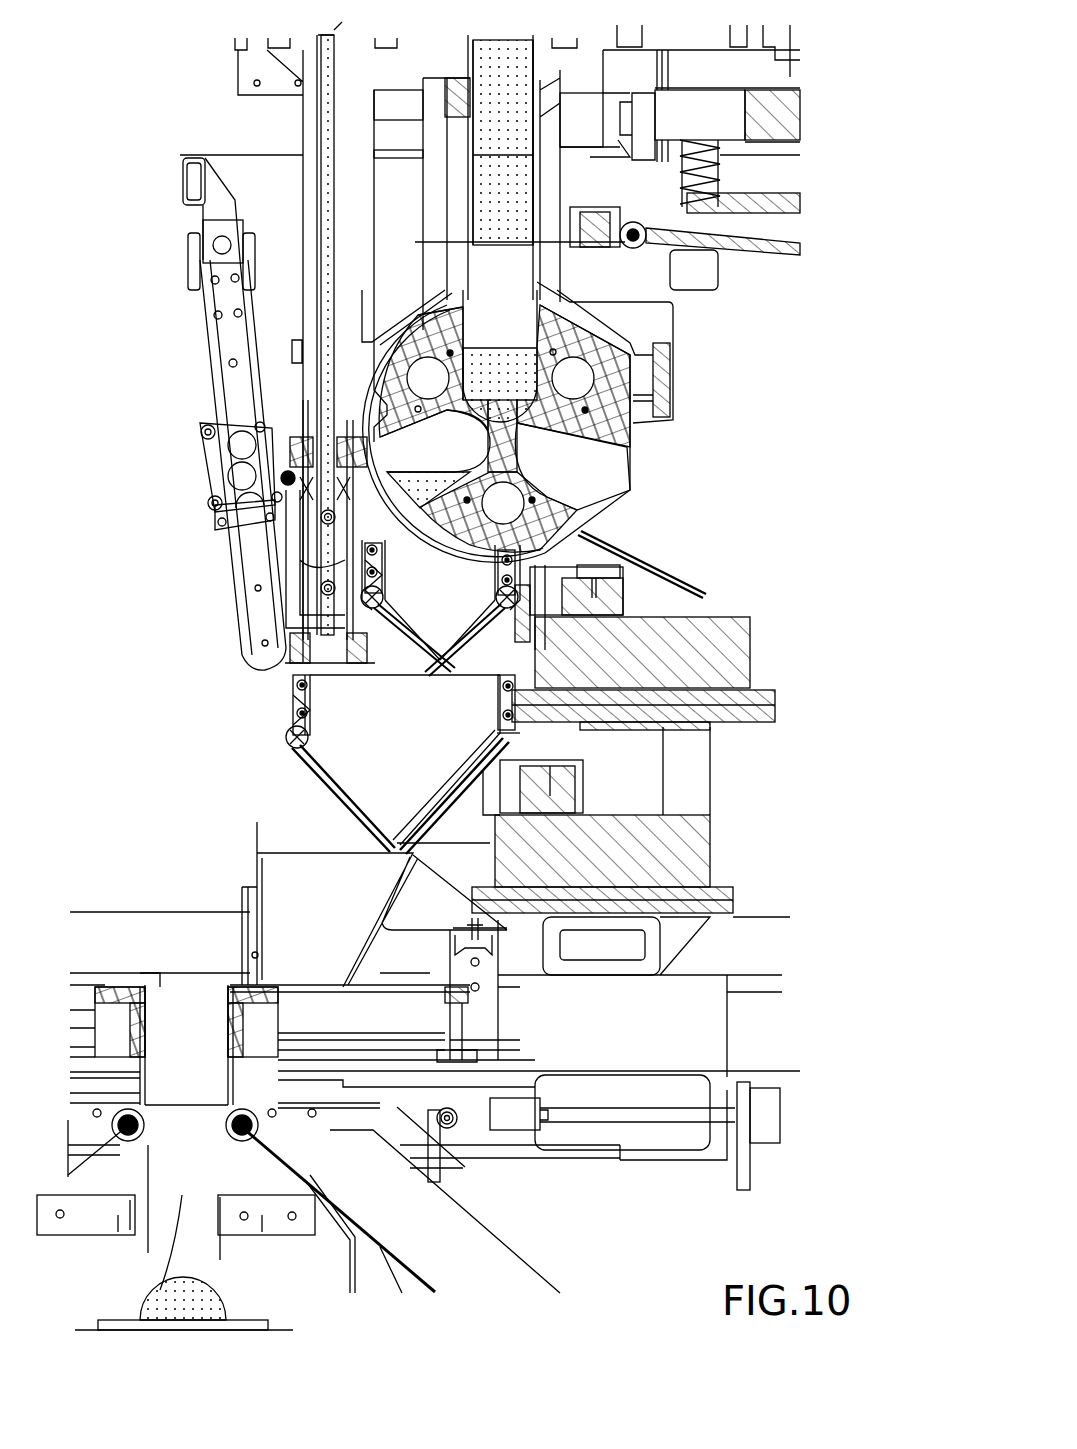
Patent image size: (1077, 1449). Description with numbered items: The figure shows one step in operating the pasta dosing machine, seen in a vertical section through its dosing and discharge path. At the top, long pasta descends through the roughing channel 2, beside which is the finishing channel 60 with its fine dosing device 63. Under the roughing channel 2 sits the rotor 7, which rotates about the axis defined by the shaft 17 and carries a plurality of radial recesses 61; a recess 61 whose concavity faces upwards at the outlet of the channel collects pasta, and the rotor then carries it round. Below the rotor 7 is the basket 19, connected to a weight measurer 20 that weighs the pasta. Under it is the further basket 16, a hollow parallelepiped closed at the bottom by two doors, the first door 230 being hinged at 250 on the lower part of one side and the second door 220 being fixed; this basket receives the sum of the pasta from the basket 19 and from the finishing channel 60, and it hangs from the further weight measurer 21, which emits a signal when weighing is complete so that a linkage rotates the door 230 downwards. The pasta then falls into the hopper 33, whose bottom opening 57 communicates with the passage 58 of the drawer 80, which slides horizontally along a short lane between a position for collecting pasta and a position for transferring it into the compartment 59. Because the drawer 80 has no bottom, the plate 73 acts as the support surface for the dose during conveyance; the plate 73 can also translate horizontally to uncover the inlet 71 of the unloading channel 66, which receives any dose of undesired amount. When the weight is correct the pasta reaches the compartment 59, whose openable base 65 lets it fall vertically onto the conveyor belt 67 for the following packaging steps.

The roughing channel 2 is at (510, 80).
The finishing channel 60 is at (335, 177).
The radial recesses 61 is at (487, 341).
The shaft 17 is at (505, 427).
The fine dosing device 63 is at (186, 468).
The rotor 7 is at (670, 501).
The basket 19 is at (422, 604).
The weight measurer 20 is at (750, 606).
The further basket 16 is at (384, 759).
The hinge 250 is at (288, 733).
The second door 220 is at (493, 758).
The first door 230 is at (325, 775).
The further weight measurer 21 is at (703, 799).
The hopper 33 is at (302, 934).
The drawer 80 is at (130, 1020).
The bottom opening 57 is at (290, 985).
The passage 58 is at (169, 1049).
The inlet 71 is at (330, 1145).
The plate 73 is at (467, 1168).
The unloading channel 66 is at (411, 1241).
The openable base 65 is at (95, 1240).
The compartment 59 is at (142, 1284).
The conveyor belt 67 is at (250, 1302).